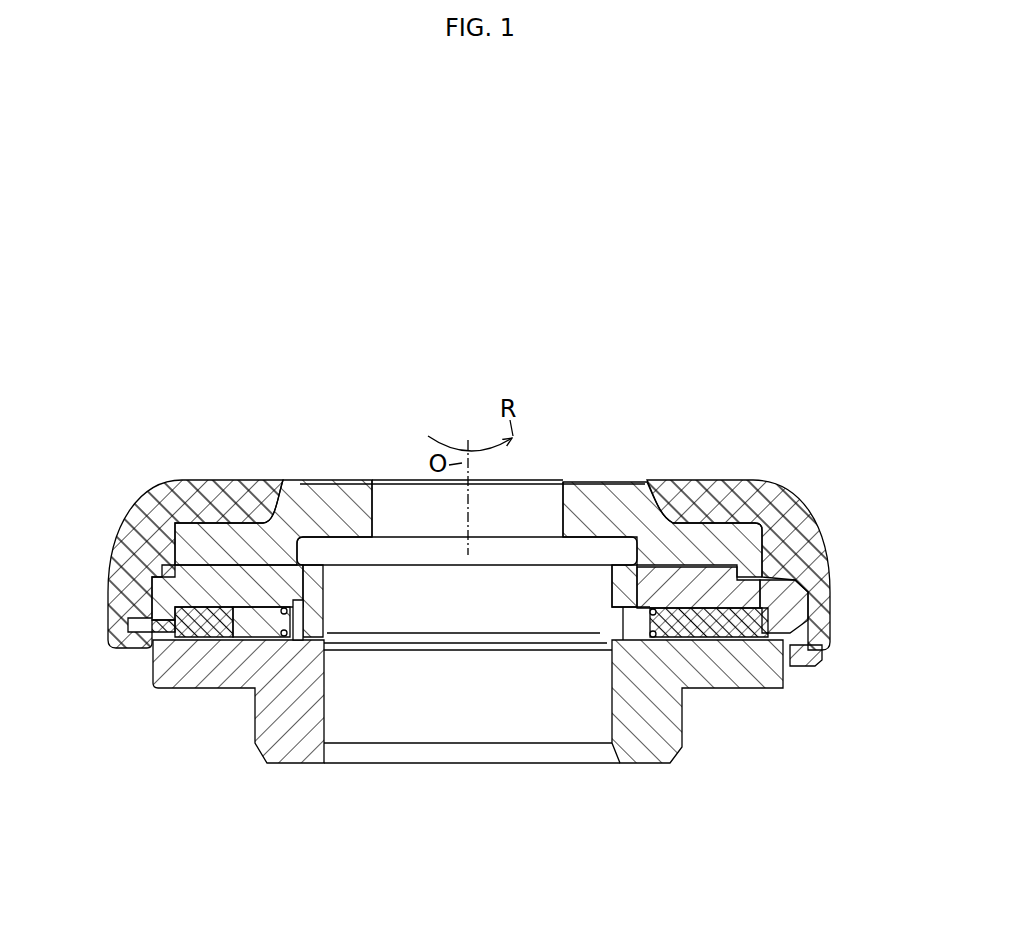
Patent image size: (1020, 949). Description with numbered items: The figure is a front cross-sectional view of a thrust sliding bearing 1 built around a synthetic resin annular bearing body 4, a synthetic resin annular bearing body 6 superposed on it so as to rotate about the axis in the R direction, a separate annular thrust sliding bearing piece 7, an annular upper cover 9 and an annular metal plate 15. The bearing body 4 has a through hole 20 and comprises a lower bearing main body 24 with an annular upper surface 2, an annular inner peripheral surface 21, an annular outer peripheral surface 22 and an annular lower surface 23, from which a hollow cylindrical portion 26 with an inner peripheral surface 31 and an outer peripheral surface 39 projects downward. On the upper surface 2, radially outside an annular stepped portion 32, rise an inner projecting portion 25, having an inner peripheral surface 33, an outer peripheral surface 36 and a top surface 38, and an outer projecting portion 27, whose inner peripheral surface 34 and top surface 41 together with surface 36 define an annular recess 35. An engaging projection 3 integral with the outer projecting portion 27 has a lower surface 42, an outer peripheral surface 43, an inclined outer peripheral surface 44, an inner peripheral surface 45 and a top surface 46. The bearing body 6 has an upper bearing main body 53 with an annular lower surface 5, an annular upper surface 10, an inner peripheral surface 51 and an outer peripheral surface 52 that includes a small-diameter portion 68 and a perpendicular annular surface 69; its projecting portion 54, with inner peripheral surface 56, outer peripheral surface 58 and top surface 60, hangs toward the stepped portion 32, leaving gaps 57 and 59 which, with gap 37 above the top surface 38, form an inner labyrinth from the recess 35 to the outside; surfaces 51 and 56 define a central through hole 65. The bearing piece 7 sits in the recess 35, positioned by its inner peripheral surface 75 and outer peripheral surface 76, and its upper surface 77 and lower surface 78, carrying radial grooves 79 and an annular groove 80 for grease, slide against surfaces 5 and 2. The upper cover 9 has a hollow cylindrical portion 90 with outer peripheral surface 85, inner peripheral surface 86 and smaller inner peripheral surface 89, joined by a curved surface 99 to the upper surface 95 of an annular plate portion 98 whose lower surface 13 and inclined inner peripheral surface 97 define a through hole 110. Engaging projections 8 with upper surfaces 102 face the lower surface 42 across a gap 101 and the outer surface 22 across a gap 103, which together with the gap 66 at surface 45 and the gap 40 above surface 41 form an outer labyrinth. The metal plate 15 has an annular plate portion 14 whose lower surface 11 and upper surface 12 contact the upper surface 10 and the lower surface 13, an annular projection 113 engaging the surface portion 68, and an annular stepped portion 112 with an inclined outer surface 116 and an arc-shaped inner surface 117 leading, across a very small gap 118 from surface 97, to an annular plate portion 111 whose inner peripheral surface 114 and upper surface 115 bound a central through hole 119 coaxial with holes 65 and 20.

The thrust sliding bearing 1 is at (140, 478).
The annular upper surface 2 is at (222, 640).
The annular engaging projection 3 is at (165, 625).
The annular bearing body 4 is at (147, 690).
The annular lower surface 5 is at (690, 617).
The annular bearing body 6 is at (740, 585).
The thrust sliding bearing piece 7 is at (733, 642).
The engaging projections 8 is at (795, 663).
The annular upper cover 9 is at (197, 478).
The annular upper surface 10 is at (231, 560).
The lower surface 11 is at (208, 565).
The upper surface 12 is at (186, 488).
The lower surface 13 is at (741, 498).
The annular plate portion 14 is at (800, 500).
The annular metal plate 15 is at (594, 478).
The through hole 20 is at (452, 733).
The annular inner peripheral surface 21 is at (324, 697).
The annular outer peripheral surface 22 is at (787, 672).
The annular lower surface 23 is at (208, 687).
The annular lower bearing main body 24 is at (188, 677).
The annular inner projecting portion 25 is at (300, 645).
The hollow cylindrical portion 26 is at (270, 730).
The annular outer projecting portion 27 is at (150, 612).
The annular inner peripheral surface 31 is at (324, 727).
The annular stepped portion 32 is at (324, 665).
The cylindrical inner peripheral surface 33 is at (327, 630).
The cylindrical inner peripheral surface 34 is at (163, 622).
The annular recess 35 is at (253, 640).
The cylindrical outer peripheral surface 36 is at (313, 600).
The annular gap 37 is at (623, 610).
The annular top surface 38 is at (313, 612).
The annular outer peripheral surface 39 is at (682, 723).
The annular gap 40 is at (785, 615).
The annular top surface 41 is at (167, 617).
The annular lower surface 42 is at (133, 630).
The annular outer peripheral surface 43 is at (812, 636).
The annular inclined outer peripheral surface 44 is at (810, 587).
The annular inner peripheral surface 45 is at (795, 535).
The annular top surface 46 is at (160, 592).
The annular inner peripheral surface 51 is at (612, 578).
The annular outer peripheral surface 52 is at (157, 580).
The upper bearing main body 53 is at (680, 540).
The annular projecting portion 54 is at (622, 625).
The annular inner peripheral surface 56 is at (320, 623).
The annular gap 57 is at (623, 607).
The outer peripheral surface 58 is at (607, 688).
The annular gap 59 is at (607, 653).
The annular top surface 60 is at (597, 648).
The central through hole 65 is at (493, 598).
The gap 66 is at (825, 542).
The small-diameter outer peripheral surface portion 68 is at (152, 570).
The annular surface 69 is at (152, 588).
The annular inner peripheral surface 75 is at (618, 712).
The outer peripheral surface 76 is at (767, 642).
The upper surface 77 is at (300, 500).
The lower surface 78 is at (707, 642).
The radially extending grooves 79 is at (283, 605).
The annular groove 80 is at (288, 630).
The cylindrical outer peripheral surface 85 is at (808, 651).
The cylindrical inner peripheral surface 86 is at (812, 613).
The cylindrical inner peripheral surface 89 is at (817, 498).
The hollow cylindrical portion 90 is at (820, 595).
The annular upper surface 95 is at (698, 545).
The inclined inner peripheral surface 97 is at (652, 498).
The annular plate portion 98 is at (733, 520).
The annular curved surface 99 is at (768, 498).
The gap 101 is at (803, 664).
The annular upper surface 102 is at (830, 660).
The gap 103 is at (790, 668).
The through hole 110 is at (282, 515).
The annular plate portion 111 is at (588, 515).
The annular stepped portion 112 is at (613, 495).
The annular projection 113 is at (828, 500).
The annular inner peripheral surface 114 is at (382, 480).
The flat annular upper surface 115 is at (323, 480).
The annular inclined outer surface 116 is at (660, 505).
The annular circular arc-shaped inner surface 117 is at (598, 498).
The gap 118 is at (272, 600).
The central through hole 119 is at (410, 510).